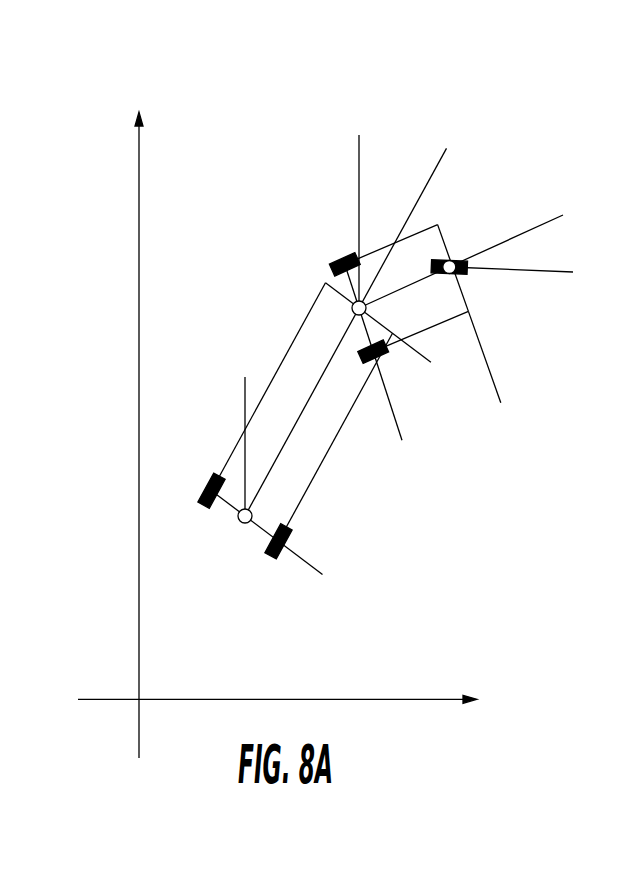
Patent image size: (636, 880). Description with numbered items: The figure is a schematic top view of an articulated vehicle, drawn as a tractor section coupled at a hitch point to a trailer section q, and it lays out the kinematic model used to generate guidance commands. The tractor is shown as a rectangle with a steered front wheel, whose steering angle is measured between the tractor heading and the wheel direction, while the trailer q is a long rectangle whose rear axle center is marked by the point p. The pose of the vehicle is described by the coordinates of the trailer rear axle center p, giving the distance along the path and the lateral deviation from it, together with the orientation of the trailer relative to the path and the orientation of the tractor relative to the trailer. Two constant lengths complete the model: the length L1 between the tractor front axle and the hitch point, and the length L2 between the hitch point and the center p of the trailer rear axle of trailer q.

The trailer body q is at (350, 307).
The trailer axle center point p is at (244, 524).
The length between tractor front axle and hitch point L1 is at (494, 385).
The length between hitch point and trailer rear axle center L2 is at (417, 352).